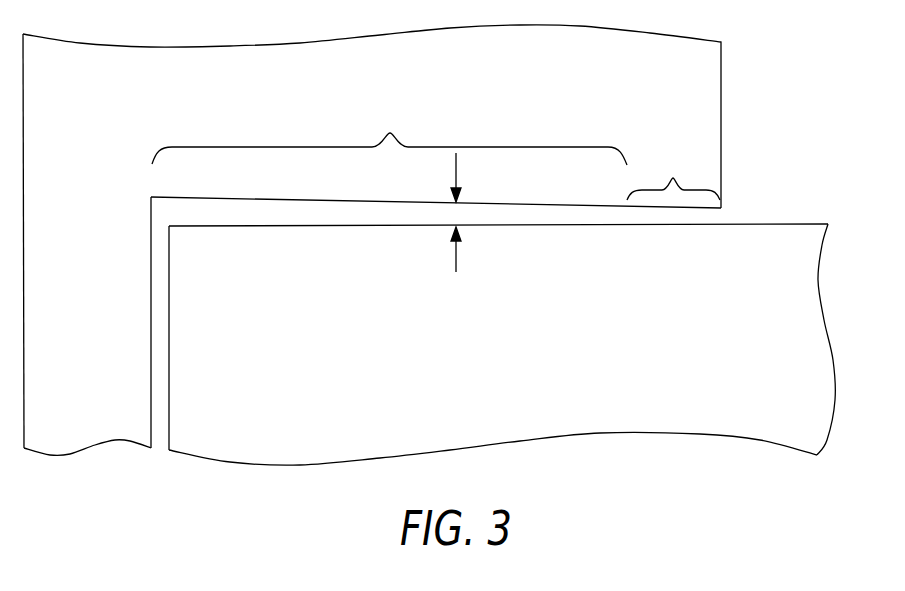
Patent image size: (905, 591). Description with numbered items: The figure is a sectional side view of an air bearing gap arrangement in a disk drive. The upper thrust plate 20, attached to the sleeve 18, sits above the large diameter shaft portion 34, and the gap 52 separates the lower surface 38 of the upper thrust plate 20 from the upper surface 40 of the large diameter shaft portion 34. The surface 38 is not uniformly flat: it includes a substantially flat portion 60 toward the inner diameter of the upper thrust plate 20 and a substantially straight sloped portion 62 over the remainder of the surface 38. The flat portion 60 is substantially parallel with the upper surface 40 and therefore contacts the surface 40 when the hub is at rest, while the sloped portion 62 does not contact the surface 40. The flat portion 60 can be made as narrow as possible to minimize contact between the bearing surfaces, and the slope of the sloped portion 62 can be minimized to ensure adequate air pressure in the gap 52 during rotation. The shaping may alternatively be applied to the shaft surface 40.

The sleeve 18 is at (103, 332).
The upper thrust plate 20 is at (587, 84).
The large diameter shaft portion 34 is at (297, 366).
The surface 38 is at (240, 197).
The upper surface 40 is at (280, 227).
The gap 52 is at (458, 227).
The flat portion 60 is at (673, 175).
The sloped portion 62 is at (389, 135).